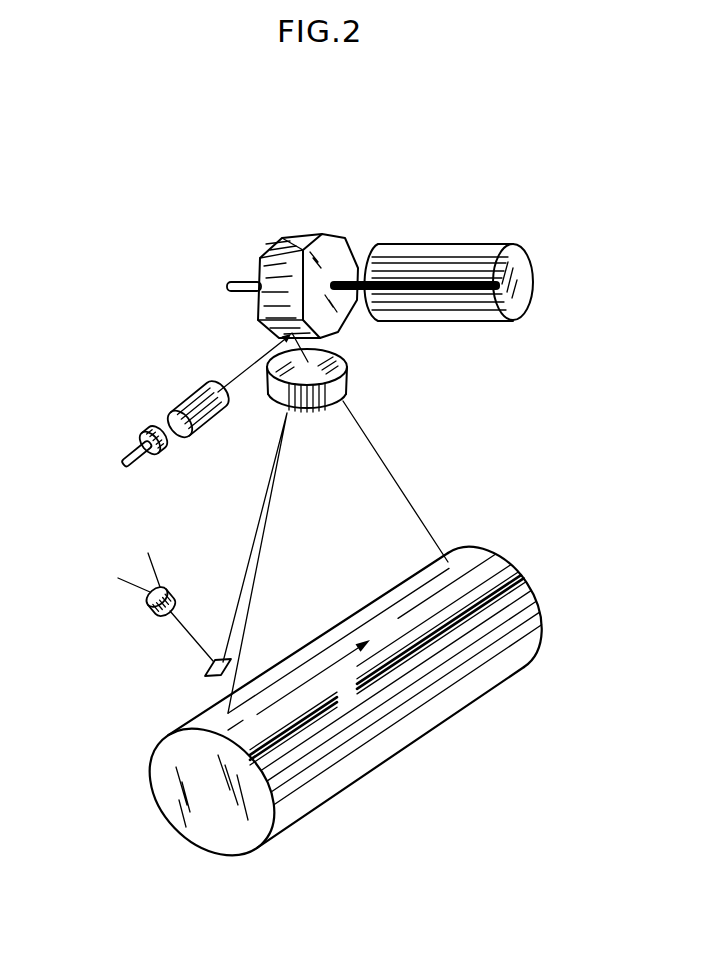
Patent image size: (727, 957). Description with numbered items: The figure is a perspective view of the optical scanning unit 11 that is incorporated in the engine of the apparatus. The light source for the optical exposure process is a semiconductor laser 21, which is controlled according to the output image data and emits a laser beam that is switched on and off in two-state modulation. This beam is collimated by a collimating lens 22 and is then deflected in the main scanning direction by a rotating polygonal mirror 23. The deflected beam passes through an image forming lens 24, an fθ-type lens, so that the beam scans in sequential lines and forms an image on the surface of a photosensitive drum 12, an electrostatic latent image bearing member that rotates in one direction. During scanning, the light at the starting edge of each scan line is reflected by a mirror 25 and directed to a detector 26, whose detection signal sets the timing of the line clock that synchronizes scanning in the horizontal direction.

The optical scanning unit 11 is at (128, 238).
The photosensitive drum 12 is at (528, 582).
The semiconductor laser 21 is at (146, 431).
The collimating lens 22 is at (191, 392).
The rotating polygonal mirror 23 is at (310, 240).
The image forming lens 24 is at (344, 389).
The mirror 25 is at (207, 674).
The detector 26 is at (150, 610).